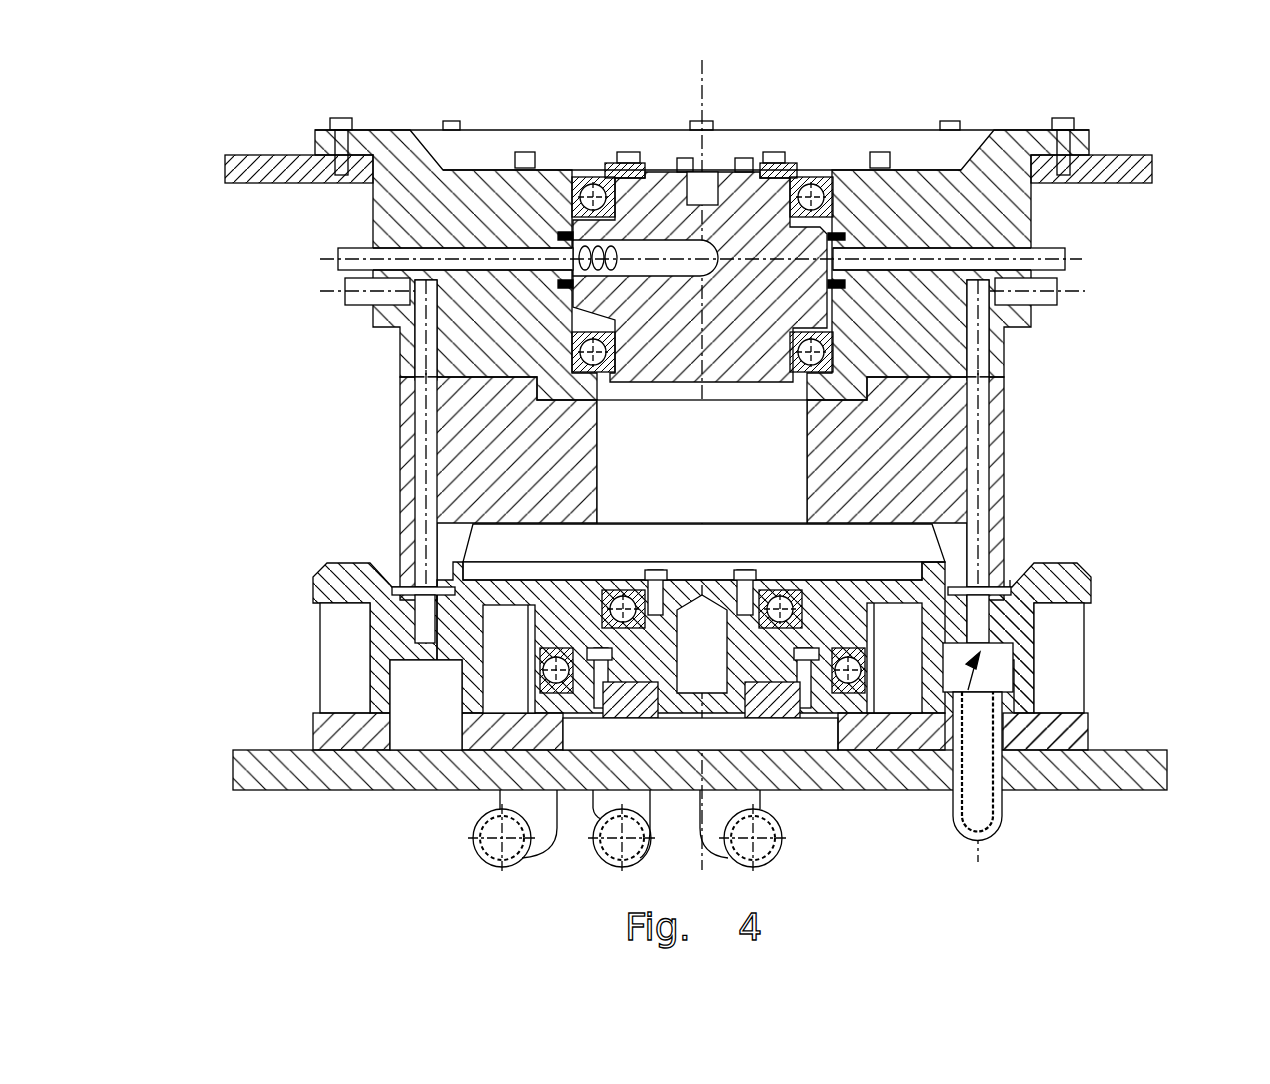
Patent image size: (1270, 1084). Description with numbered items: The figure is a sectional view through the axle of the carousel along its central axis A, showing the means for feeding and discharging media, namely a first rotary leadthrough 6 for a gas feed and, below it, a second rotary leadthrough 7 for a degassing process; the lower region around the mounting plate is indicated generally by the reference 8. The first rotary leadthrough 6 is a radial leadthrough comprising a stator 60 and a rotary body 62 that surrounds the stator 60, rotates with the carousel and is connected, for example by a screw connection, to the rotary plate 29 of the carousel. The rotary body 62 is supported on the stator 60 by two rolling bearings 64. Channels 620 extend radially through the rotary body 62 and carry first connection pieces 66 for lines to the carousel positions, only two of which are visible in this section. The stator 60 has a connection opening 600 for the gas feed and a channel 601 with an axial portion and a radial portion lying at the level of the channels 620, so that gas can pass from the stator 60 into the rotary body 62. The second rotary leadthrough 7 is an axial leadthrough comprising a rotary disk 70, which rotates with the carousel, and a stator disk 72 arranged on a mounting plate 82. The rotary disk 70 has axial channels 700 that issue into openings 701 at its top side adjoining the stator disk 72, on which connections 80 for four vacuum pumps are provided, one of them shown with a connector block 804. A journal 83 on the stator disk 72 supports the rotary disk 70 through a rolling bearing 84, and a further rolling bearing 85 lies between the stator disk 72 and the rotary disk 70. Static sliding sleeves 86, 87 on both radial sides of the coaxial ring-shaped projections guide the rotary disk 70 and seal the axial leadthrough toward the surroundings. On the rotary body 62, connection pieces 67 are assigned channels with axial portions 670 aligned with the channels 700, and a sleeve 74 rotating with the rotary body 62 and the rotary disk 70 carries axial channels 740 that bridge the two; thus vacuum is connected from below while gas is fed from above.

The first rotary leadthrough 6 is at (1020, 110).
The second rotary leadthrough 7 is at (237, 447).
The base assembly 8 is at (250, 831).
The rotary plate 29 is at (1143, 167).
The stator 60 is at (740, 197).
The connection opening 600 is at (697, 168).
The channel 601 is at (663, 253).
The rotary body 62 is at (1080, 137).
The channels 620 is at (448, 252).
The rolling bearings 64 is at (890, 335).
The first connection pieces 66 is at (337, 253).
The connection pieces 67 is at (347, 298).
The portions 670 is at (422, 352).
The rotary disk 70 is at (1083, 578).
The channels 700 is at (418, 625).
The openings 701 is at (410, 692).
The stator disk 72 is at (905, 735).
The sleeve 74 is at (1000, 527).
The channels 740 is at (422, 478).
The connections 80 is at (490, 850).
The connector block 804 is at (955, 672).
The mounting plate 82 is at (1142, 785).
The journal 83 is at (713, 590).
The rolling bearing 84 is at (615, 590).
The rolling bearing 85 is at (553, 697).
The sliding sleeve 86 is at (337, 688).
The sliding sleeve 87 is at (427, 650).
The central axis A is at (704, 90).